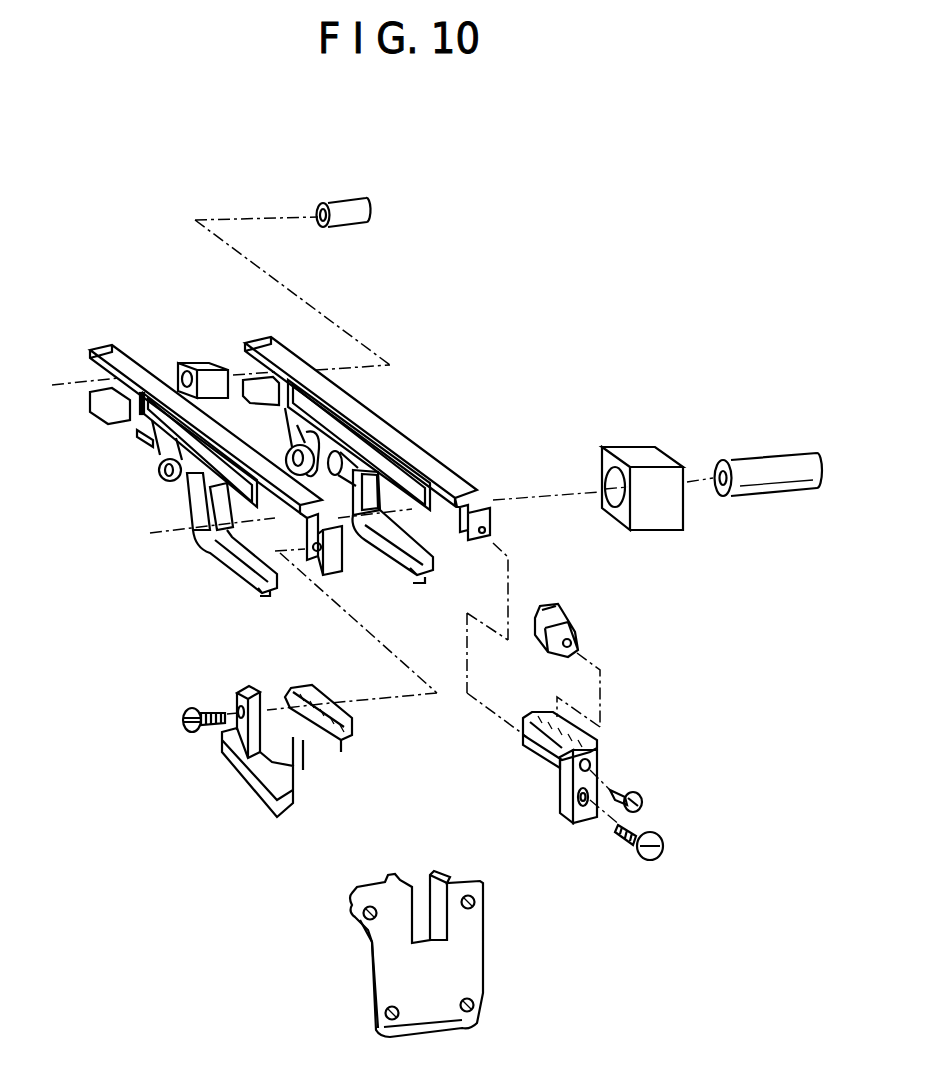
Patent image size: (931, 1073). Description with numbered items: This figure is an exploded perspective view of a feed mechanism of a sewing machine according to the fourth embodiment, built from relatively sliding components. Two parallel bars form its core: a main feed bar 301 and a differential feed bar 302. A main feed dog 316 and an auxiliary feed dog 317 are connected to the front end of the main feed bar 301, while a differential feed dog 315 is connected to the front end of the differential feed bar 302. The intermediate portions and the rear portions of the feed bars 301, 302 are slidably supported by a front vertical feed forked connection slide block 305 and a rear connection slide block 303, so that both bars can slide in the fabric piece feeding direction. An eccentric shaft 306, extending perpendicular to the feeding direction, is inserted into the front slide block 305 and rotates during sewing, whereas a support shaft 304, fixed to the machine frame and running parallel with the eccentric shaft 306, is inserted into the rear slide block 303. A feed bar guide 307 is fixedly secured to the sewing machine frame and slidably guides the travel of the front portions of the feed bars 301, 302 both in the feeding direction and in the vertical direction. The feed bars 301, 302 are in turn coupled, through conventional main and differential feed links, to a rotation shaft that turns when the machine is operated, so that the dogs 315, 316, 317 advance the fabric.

The main feed bar 301 is at (260, 338).
The differential feed bar 302 is at (112, 353).
The rear connection slide block 303 is at (198, 353).
The support shaft 304 is at (344, 208).
The front vertical feed forked connection slide block 305 is at (632, 448).
The eccentric shaft 306 is at (757, 460).
The feed bar guide 307 is at (470, 937).
The differential feed dog 315 is at (323, 750).
The main feed dog 316 is at (545, 748).
The auxiliary feed dog 317 is at (578, 640).